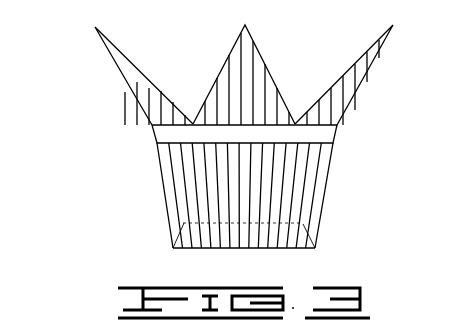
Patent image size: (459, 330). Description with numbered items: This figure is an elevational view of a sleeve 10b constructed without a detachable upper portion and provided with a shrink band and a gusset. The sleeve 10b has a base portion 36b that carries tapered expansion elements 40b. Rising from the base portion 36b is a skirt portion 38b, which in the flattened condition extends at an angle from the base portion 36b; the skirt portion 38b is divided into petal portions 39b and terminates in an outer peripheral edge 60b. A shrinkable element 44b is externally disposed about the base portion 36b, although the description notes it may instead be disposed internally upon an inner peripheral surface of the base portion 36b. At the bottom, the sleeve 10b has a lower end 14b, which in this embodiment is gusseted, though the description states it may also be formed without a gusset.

The sleeve 10b is at (116, 139).
The lower end 14b is at (290, 248).
The base portion 36b is at (164, 190).
The skirt portion 38b is at (124, 78).
The petal portions 39b is at (235, 75).
The tapered expansion elements 40b is at (232, 211).
The shrinkable element 44b is at (340, 133).
The outer peripheral edge 60b is at (258, 44).